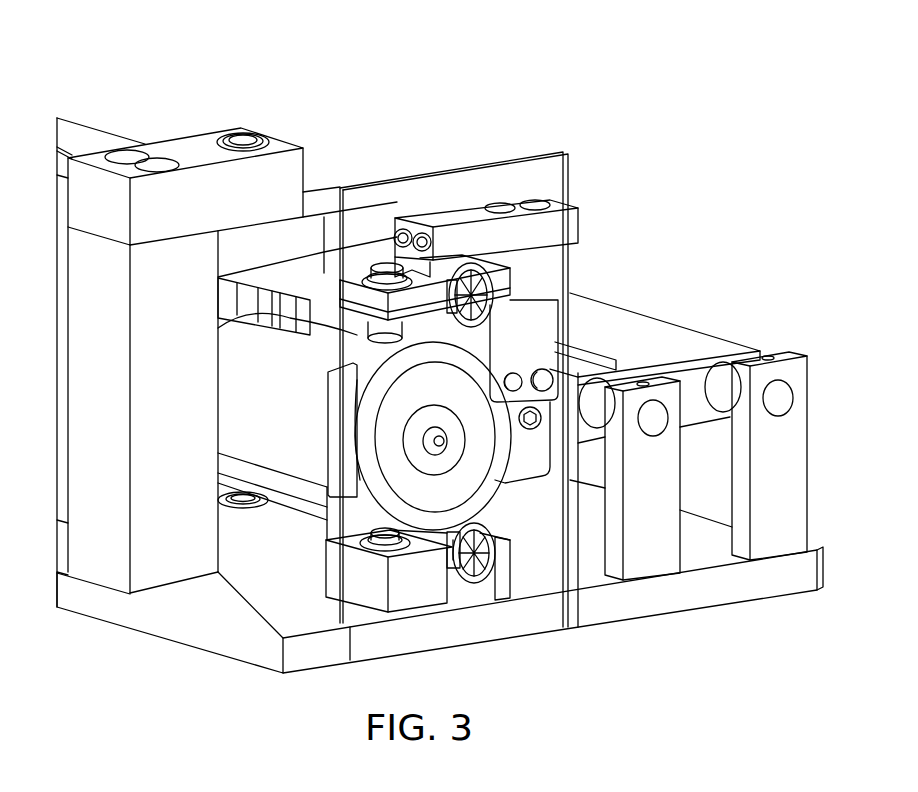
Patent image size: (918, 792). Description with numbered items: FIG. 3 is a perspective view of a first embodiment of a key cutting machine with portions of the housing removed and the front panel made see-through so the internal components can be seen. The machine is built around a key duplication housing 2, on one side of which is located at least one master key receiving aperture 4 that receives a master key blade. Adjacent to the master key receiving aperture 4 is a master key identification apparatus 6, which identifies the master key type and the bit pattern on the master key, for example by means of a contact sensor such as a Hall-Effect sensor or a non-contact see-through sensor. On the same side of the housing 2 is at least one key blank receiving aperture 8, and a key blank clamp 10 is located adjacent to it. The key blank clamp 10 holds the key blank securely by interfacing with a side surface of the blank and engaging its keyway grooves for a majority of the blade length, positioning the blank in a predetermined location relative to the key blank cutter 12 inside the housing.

The key duplication housing 2 is at (195, 158).
The master key receiving aperture 4 is at (448, 277).
The master key identification apparatus 6 is at (331, 240).
The key blank receiving aperture 8 is at (488, 582).
The key blank clamp 10 is at (335, 547).
The key blank cutter 12 is at (380, 455).